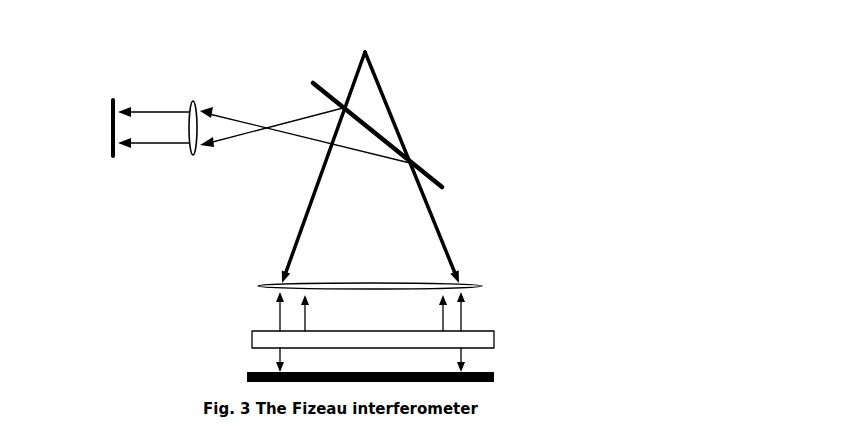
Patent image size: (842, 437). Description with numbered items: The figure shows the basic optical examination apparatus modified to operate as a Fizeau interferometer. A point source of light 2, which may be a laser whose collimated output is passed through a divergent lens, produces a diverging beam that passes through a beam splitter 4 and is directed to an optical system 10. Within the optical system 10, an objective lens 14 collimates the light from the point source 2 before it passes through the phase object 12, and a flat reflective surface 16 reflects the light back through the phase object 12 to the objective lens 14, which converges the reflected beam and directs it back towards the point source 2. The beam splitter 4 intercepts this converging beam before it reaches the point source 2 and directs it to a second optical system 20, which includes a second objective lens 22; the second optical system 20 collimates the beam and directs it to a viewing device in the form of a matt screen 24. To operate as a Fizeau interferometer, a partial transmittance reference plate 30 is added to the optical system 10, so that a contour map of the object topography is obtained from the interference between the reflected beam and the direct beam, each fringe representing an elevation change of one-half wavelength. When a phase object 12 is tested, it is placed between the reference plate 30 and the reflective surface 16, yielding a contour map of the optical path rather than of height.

The point source of light 2 is at (366, 50).
The beam splitter 4 is at (430, 173).
The optical system 10 is at (221, 289).
The phase object 12 is at (472, 360).
The objective lens 14 is at (475, 288).
The flat reflective surface 16 is at (253, 370).
The second optical system 20 is at (177, 196).
The second objective lens 22 is at (200, 150).
The matt screen 24 is at (110, 137).
The partial transmittance reference plate 30 is at (252, 331).